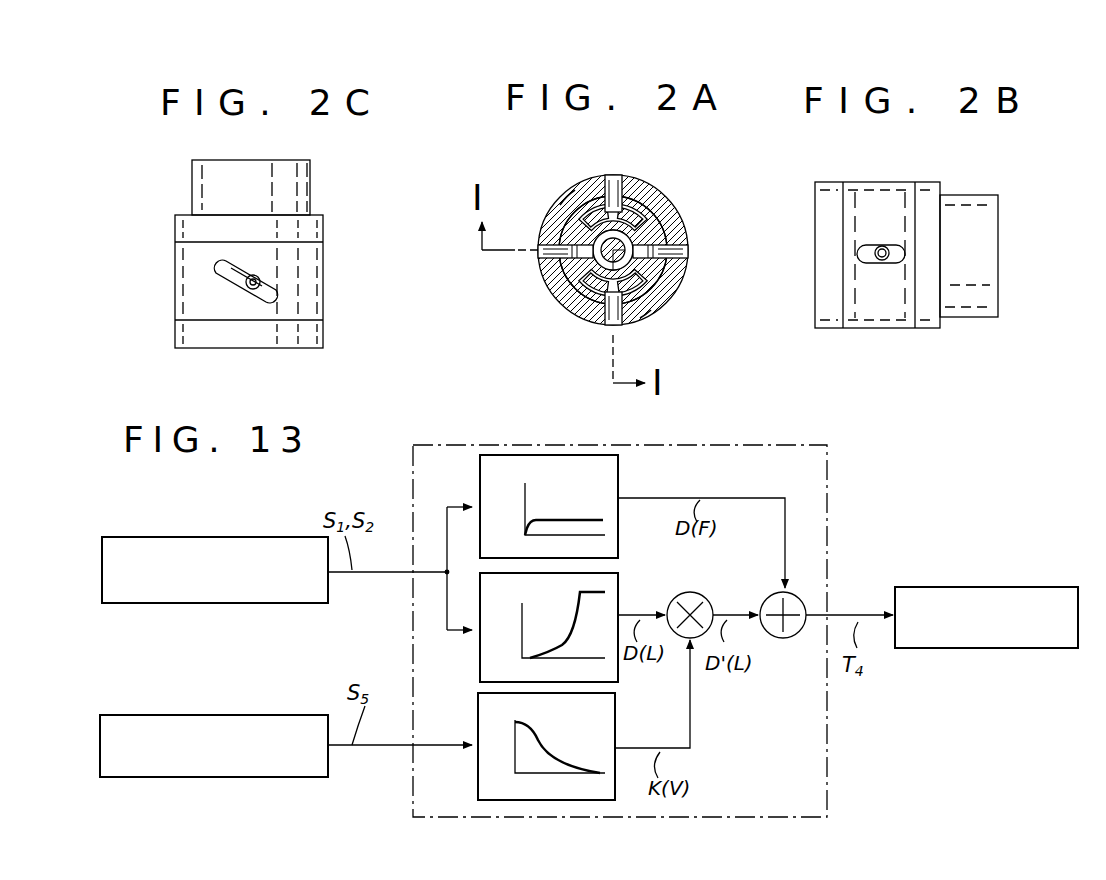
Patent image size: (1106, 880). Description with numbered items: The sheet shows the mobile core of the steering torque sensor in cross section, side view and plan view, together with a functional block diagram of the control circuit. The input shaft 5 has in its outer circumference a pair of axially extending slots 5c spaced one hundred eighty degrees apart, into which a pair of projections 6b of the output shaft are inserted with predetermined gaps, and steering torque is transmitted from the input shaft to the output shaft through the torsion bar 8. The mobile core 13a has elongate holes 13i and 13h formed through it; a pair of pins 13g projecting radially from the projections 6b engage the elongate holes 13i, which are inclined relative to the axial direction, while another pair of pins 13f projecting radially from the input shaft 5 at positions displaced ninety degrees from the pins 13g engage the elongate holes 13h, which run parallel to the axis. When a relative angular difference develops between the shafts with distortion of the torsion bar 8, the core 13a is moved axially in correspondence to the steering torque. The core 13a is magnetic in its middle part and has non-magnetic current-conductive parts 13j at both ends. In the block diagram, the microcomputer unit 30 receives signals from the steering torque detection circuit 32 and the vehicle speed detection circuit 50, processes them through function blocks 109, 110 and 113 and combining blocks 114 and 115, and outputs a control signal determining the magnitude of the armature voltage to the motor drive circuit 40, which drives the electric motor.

In FIG. 2A, the input shaft 5 is at (680, 236).
In FIG. 2A, the slots 5c is at (640, 205).
In FIG. 2A, the projections 6b is at (588, 198).
In FIG. 2A, the torsion bar 8 is at (625, 262).
In FIG. 2C, the mobile core 13a is at (323, 272).
In FIG. 2A, the mobile core 13a is at (660, 215).
In FIG. 2B, the mobile core 13a is at (888, 320).
In FIG. 2A, the pins 13f is at (688, 252).
In FIG. 2B, the pins 13f is at (882, 260).
In FIG. 2C, the pins 13g is at (260, 278).
In FIG. 2A, the pins 13g is at (614, 178).
In FIG. 2B, the elongate holes 13h is at (897, 248).
In FIG. 2C, the elongate holes 13i is at (233, 262).
In FIG. 2C, the non-magnetic current-conductive parts 13j is at (323, 220).
In FIG. 2B, the non-magnetic current-conductive parts 13j is at (828, 318).
In FIG. 13, the microcomputer unit 30 is at (413, 470).
In FIG. 13, the steering torque detection circuit 32 is at (262, 537).
In FIG. 13, the motor drive circuit 40 is at (1000, 650).
In FIG. 13, the vehicle speed detection circuit 50 is at (175, 715).
In FIG. 13, the function generator D(F) 109 is at (620, 474).
In FIG. 13, the function generator D(L) 110 is at (620, 580).
In FIG. 13, the function generator K(V) 113 is at (478, 705).
In FIG. 13, the multiplier 114 is at (713, 598).
In FIG. 13, the adder 115 is at (788, 640).